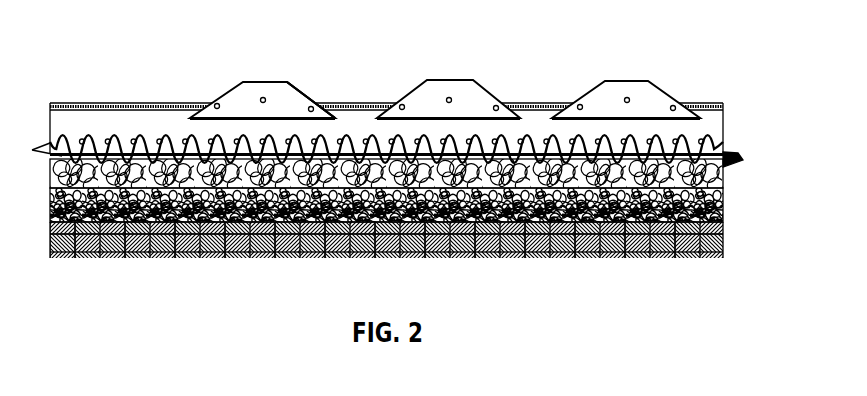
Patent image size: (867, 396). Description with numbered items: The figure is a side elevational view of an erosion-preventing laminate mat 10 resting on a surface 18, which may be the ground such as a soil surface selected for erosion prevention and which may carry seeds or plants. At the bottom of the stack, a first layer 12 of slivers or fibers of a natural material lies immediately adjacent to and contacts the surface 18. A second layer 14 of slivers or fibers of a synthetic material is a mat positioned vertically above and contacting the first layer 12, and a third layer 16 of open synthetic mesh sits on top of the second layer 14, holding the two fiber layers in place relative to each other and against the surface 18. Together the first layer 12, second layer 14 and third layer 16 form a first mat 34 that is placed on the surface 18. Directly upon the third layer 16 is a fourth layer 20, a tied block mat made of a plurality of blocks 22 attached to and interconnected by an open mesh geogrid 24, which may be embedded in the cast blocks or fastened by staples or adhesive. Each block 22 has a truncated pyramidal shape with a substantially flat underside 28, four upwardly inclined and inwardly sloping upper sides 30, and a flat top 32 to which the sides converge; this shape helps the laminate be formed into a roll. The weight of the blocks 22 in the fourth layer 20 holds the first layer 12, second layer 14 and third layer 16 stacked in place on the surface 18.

The erosion-preventing laminate mat 10 is at (599, 60).
The first layer 12 is at (50, 218).
The second layer 14 is at (50, 178).
The third layer 16 is at (100, 135).
The surface 18 is at (677, 250).
The fourth layer 20 is at (311, 87).
The blocks 22 is at (241, 91).
The geogrid 24 is at (216, 104).
The undersides 28 is at (203, 118).
The upper sides 30 is at (304, 92).
The flat top 32 is at (252, 80).
The first mat 34 is at (743, 130).